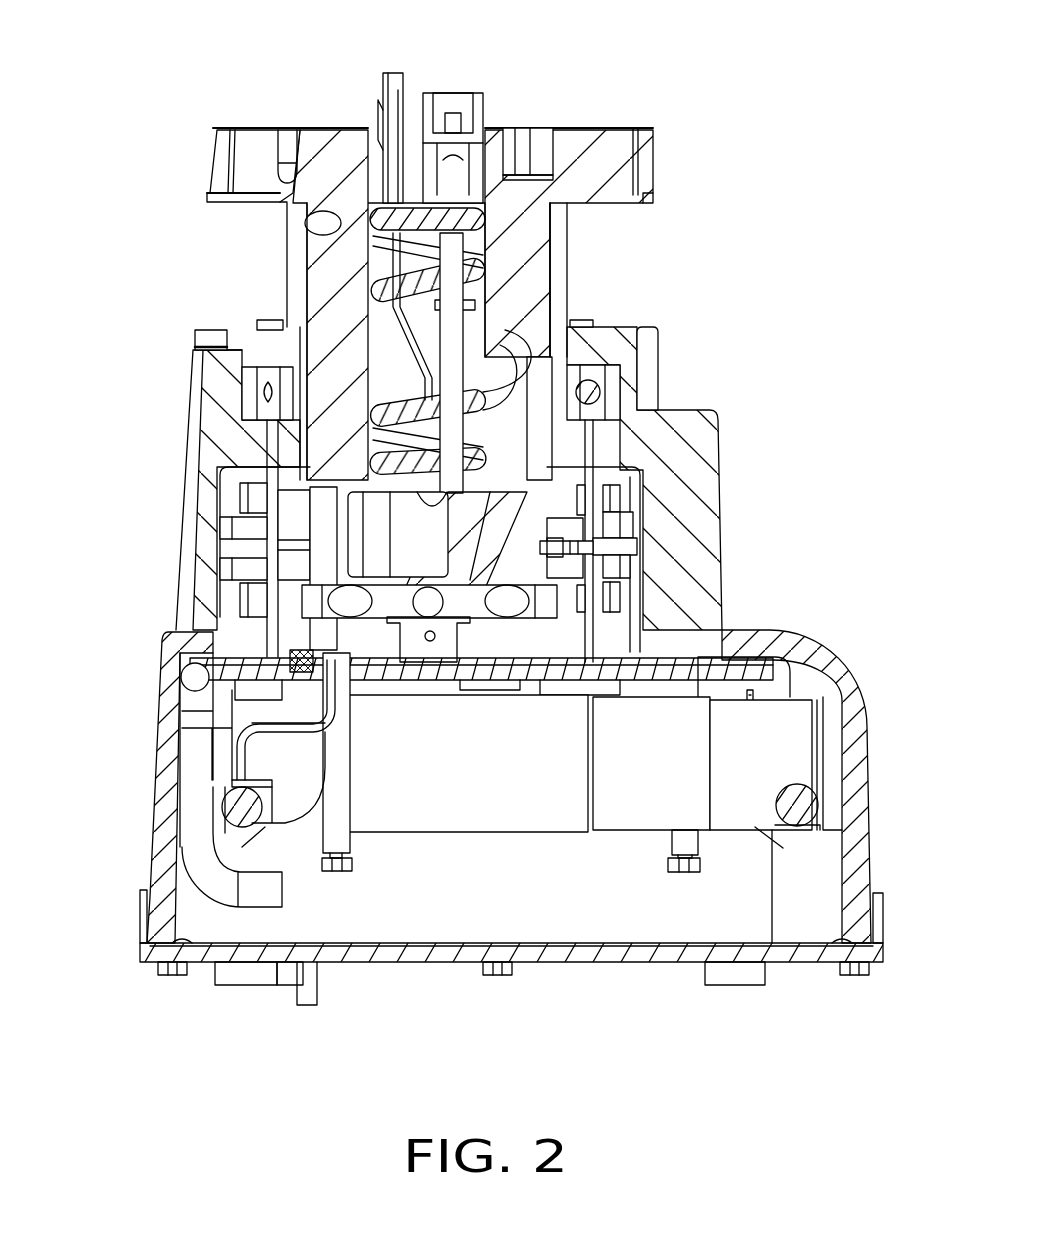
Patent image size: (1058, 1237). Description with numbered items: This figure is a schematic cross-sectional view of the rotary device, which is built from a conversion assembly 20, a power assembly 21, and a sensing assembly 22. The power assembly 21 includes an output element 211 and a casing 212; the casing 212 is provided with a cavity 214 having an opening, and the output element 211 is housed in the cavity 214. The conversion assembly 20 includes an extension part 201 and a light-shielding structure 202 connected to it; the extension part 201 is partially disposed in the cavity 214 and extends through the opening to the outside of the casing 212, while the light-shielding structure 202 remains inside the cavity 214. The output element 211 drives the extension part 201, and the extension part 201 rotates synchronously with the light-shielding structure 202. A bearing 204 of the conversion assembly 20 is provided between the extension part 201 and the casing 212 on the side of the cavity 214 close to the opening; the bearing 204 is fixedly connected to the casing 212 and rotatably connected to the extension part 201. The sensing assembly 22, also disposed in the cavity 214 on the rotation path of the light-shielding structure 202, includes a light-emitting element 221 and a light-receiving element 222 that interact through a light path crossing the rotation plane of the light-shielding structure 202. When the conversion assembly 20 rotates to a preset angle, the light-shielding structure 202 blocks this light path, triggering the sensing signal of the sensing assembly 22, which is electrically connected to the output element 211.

The conversion assembly 20 is at (290, 242).
The extension part 201 is at (552, 237).
The bearing 204 is at (607, 382).
The power assembly 21 is at (210, 387).
The casing 212 is at (710, 590).
The sensing assembly 22 is at (497, 521).
The light-emitting element 221 is at (290, 522).
The light-receiving element 222 is at (290, 565).
The light-shielding structure 202 is at (640, 552).
The output element 211 is at (797, 750).
The cavity 214 is at (277, 755).